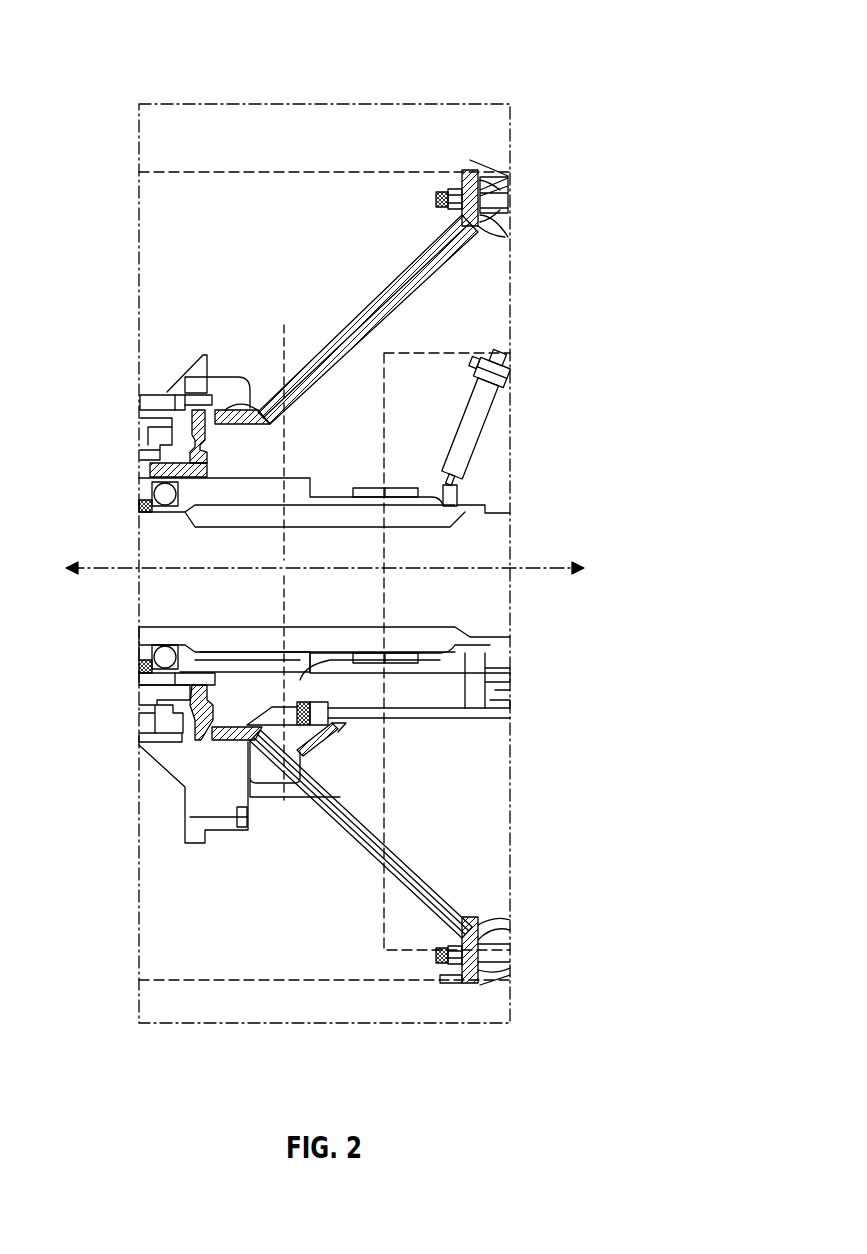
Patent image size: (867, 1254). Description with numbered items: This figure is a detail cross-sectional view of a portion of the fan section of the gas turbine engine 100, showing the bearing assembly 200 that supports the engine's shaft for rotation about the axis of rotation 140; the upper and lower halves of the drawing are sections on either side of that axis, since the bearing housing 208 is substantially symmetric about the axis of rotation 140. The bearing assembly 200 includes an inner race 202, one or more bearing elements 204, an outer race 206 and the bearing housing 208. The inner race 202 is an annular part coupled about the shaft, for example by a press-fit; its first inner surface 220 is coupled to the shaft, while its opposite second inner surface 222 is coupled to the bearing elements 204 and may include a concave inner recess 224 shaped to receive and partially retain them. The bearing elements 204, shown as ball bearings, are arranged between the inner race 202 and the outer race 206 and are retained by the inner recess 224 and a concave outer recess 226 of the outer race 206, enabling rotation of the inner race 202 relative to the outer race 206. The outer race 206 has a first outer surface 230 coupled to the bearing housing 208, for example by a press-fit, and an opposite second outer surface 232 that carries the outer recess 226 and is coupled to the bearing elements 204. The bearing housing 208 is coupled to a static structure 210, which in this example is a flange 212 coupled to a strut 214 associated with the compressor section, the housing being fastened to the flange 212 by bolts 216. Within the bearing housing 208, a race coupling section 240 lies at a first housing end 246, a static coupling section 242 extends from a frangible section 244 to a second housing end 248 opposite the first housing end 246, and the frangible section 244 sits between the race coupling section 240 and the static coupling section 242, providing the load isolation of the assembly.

The gas turbine engine 100 is at (528, 45).
The axis of rotation 140 is at (522, 566).
The bearing assembly 200 is at (365, 125).
The inner race 202 is at (152, 512).
The bearing elements 204 is at (152, 492).
The outer race 206 is at (215, 420).
The bearing housing 208 is at (370, 585).
The static structure 210 is at (482, 576).
The flange 212 is at (483, 213).
The strut 214 is at (485, 170).
The bolts 216 is at (436, 200).
The first inner surface 220 is at (252, 660).
The second inner surface 222 is at (160, 695).
The concave inner recess 224 is at (152, 640).
The concave outer recess 226 is at (180, 640).
The first outer surface 230 is at (210, 745).
The second outer surface 232 is at (150, 657).
The race coupling section 240 is at (139, 428).
The static coupling section 242 is at (412, 300).
The frangible section 244 is at (285, 420).
The first housing end 246 is at (139, 460).
The second housing end 248 is at (483, 178).